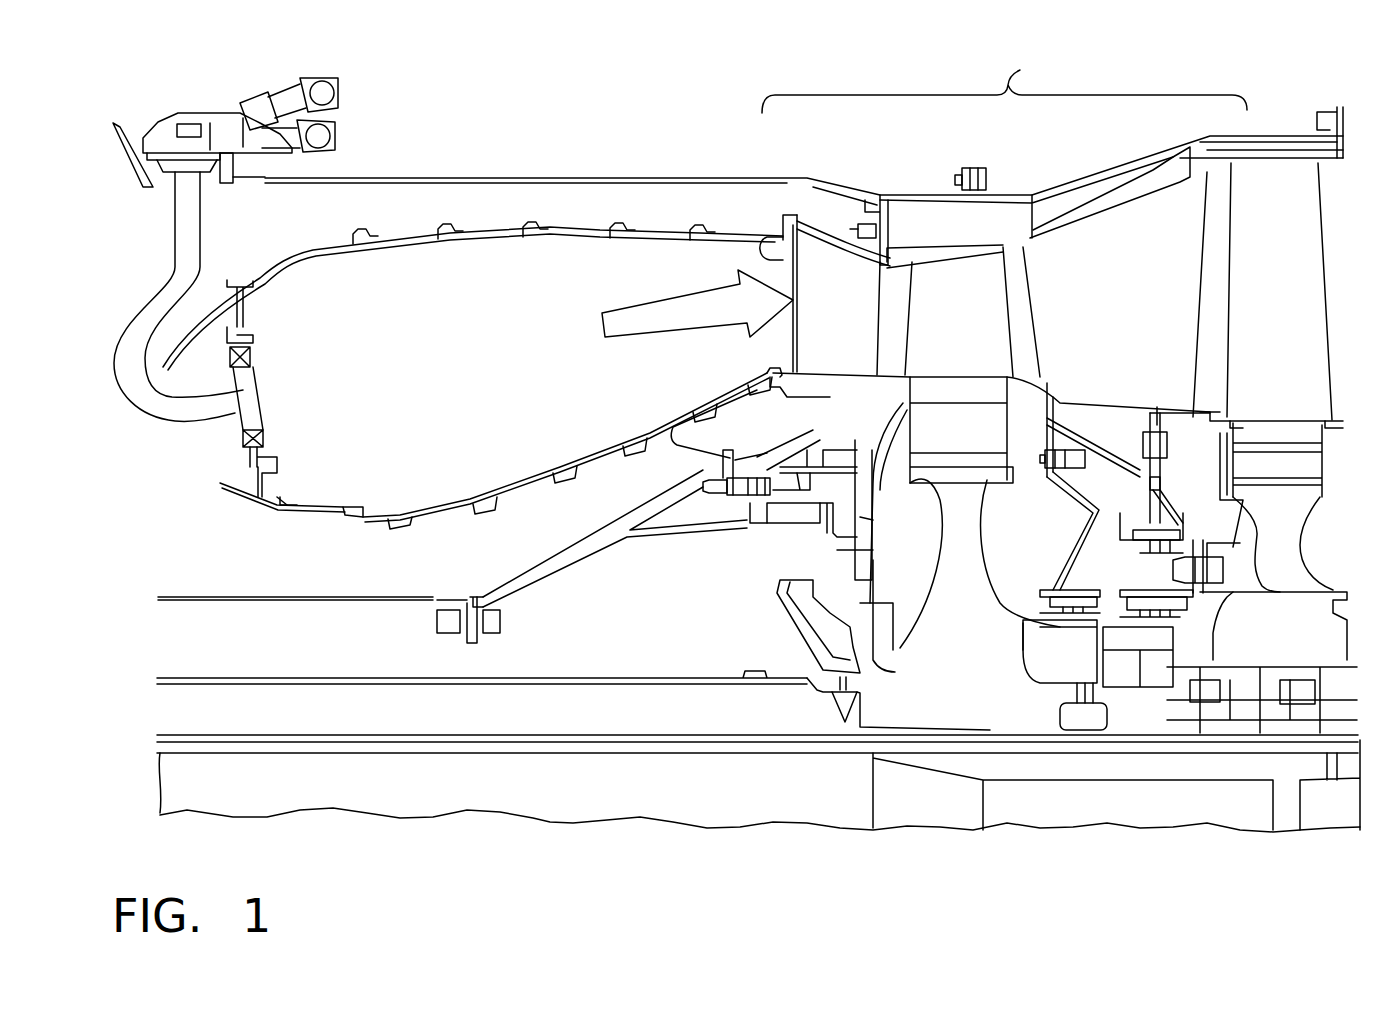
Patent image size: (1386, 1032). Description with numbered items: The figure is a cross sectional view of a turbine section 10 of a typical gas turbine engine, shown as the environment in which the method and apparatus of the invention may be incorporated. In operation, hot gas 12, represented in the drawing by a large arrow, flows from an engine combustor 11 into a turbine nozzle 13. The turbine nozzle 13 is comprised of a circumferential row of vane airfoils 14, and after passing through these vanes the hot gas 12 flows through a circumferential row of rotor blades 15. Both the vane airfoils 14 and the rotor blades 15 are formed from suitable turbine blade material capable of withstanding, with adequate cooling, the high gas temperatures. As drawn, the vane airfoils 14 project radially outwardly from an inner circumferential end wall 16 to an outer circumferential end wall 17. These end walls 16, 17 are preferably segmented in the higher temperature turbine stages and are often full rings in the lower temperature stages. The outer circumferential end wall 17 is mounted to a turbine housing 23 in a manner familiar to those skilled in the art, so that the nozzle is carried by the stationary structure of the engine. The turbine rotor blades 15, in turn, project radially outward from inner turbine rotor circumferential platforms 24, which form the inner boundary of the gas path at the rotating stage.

The turbine section 10 is at (1004, 80).
The engine combustor 11 is at (563, 228).
The hot gas 12 is at (640, 308).
The turbine nozzle 13 is at (780, 240).
The vane airfoils 14 is at (818, 313).
The rotor blades 15 is at (962, 320).
The inner circumferential end wall 16 is at (841, 373).
The outer circumferential end wall 17 is at (828, 225).
The turbine housing 23 is at (873, 193).
The inner turbine rotor circumferential platforms 24 is at (936, 383).